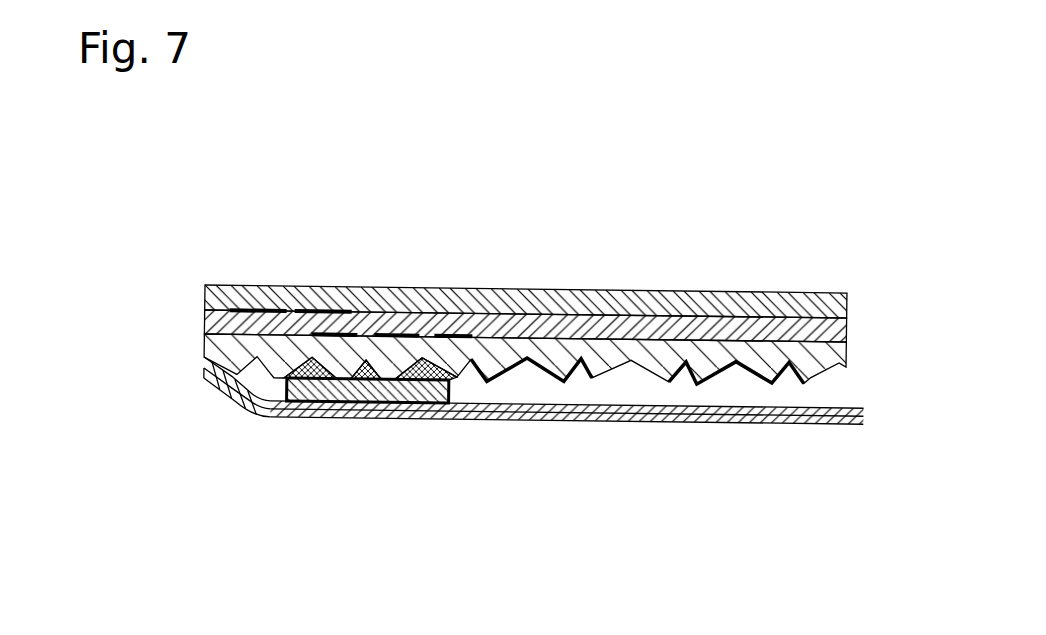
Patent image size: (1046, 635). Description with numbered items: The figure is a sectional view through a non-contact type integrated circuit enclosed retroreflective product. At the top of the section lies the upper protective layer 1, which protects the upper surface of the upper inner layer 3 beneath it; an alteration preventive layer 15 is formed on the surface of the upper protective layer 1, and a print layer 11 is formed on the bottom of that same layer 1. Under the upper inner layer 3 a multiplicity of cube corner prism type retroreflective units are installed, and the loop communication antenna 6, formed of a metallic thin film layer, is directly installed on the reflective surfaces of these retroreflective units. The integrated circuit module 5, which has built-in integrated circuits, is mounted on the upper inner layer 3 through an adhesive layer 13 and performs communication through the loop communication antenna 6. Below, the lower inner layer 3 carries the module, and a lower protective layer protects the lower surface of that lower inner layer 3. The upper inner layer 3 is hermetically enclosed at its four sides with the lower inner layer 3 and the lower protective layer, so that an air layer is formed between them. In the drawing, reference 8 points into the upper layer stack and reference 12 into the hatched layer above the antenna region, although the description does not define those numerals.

The upper protective layer 1 is at (525, 267).
The inner layer 3 is at (550, 467).
The integrated circuit module 5 is at (405, 478).
The loop communication antenna 6 is at (637, 441).
The cover layer 8 is at (526, 232).
The print layer 11 is at (444, 264).
The intermediate layer 12 is at (525, 320).
The adhesive layer 13 is at (430, 309).
The alteration preventive layer 15 is at (391, 212).